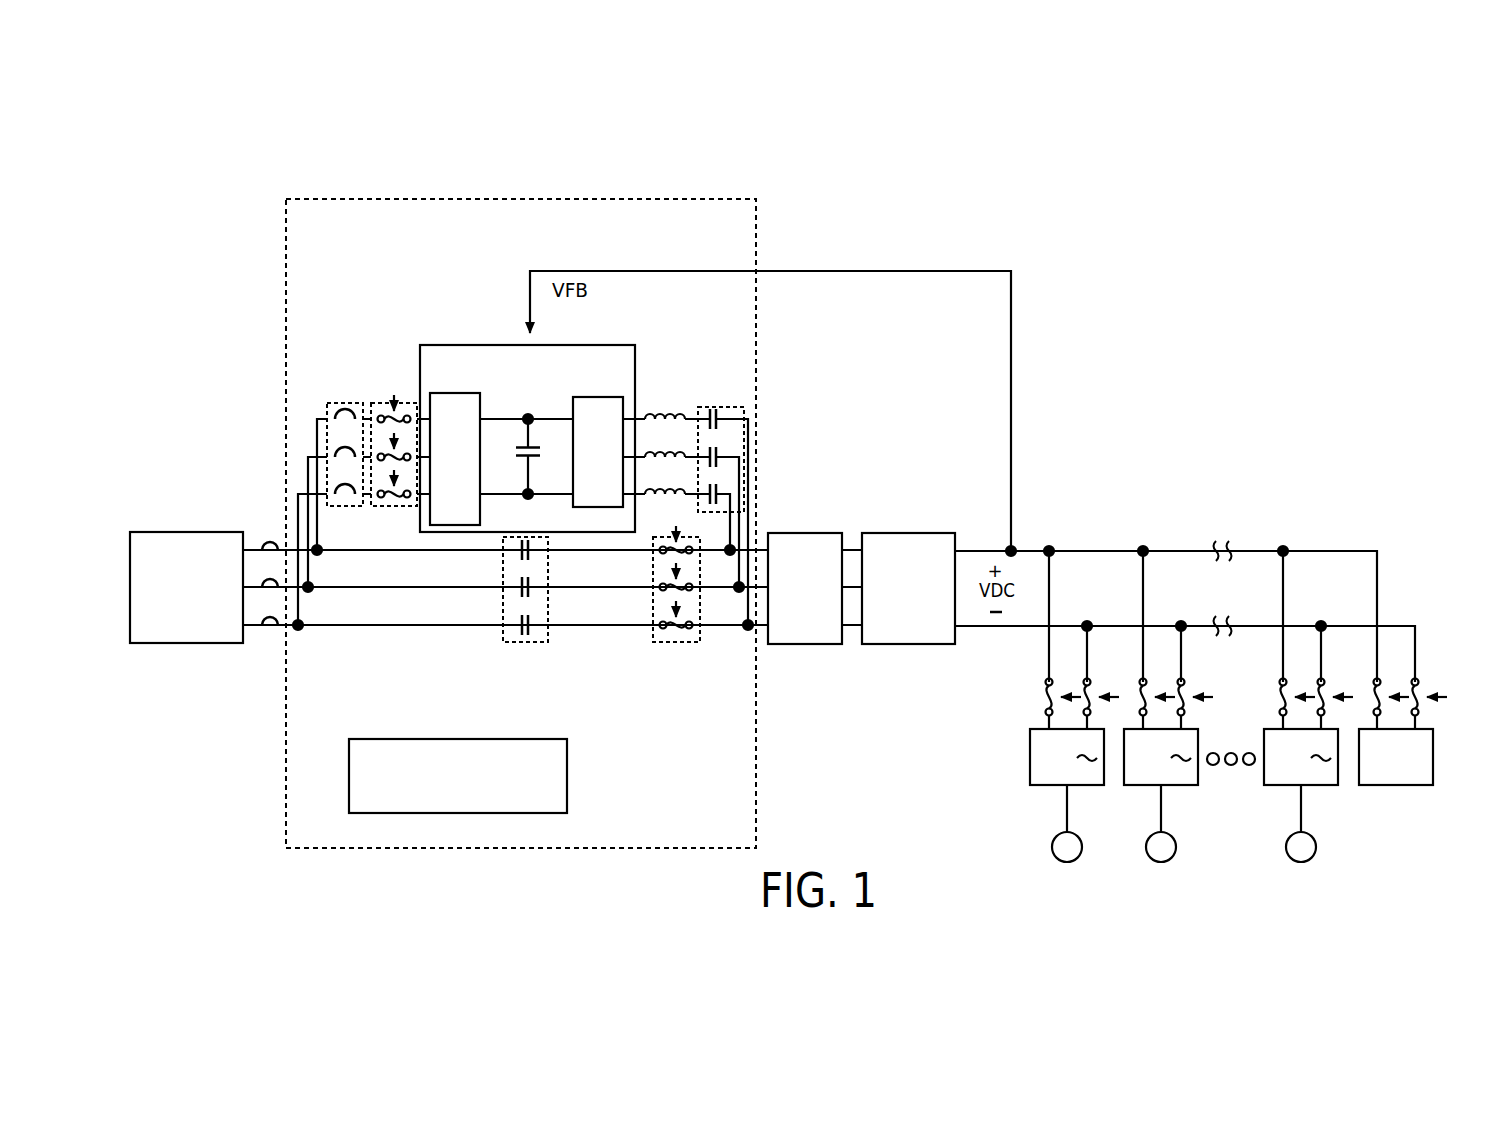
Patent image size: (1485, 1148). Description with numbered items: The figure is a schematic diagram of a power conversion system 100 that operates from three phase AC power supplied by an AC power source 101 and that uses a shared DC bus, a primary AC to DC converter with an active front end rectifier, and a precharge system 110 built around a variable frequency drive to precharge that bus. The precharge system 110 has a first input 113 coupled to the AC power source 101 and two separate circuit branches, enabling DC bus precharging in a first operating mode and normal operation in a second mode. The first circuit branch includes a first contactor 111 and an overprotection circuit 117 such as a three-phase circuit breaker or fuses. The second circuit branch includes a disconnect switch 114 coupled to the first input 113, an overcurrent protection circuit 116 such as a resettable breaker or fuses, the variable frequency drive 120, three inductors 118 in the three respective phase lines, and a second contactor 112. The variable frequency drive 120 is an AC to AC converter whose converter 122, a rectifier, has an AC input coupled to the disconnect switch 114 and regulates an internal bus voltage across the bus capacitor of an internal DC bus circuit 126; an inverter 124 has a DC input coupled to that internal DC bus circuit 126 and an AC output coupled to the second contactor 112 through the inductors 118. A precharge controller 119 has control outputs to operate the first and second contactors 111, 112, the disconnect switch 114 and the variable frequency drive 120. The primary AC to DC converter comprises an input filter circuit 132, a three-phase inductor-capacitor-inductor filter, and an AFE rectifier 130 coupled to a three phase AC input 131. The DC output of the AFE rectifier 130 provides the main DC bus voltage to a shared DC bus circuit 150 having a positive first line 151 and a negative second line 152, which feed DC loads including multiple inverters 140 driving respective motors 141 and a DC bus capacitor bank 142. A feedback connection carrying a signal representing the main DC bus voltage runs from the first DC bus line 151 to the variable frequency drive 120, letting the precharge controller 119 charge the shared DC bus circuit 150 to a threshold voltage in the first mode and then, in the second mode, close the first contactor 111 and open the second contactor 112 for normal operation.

The power conversion system 100 is at (235, 124).
The AC power source 101 is at (151, 532).
The precharge system 110 is at (530, 199).
The first contactor 111 is at (527, 642).
The second contactor 112 is at (732, 407).
The first input 113 is at (276, 517).
The disconnect switch 114 is at (350, 403).
The overcurrent protection circuit 116 is at (387, 403).
The overprotection circuit 117 is at (679, 642).
The inductors 118 is at (671, 391).
The precharge controller 119 is at (456, 739).
The variable frequency drive 120 is at (458, 345).
The converter 122 is at (438, 393).
The inverter 124 is at (620, 397).
The internal DC bus circuit 126 is at (543, 477).
The AFE rectifier 130 is at (861, 570).
The three phase AC input 131 is at (758, 647).
The input filter circuit 132 is at (775, 644).
The inverters 140 is at (1030, 760).
The motors 141 is at (1060, 862).
The DC bus capacitor bank 142 is at (1418, 785).
The shared DC bus circuit 150 is at (1323, 519).
The first DC bus line 151 is at (1073, 551).
The second DC bus line 152 is at (1073, 626).